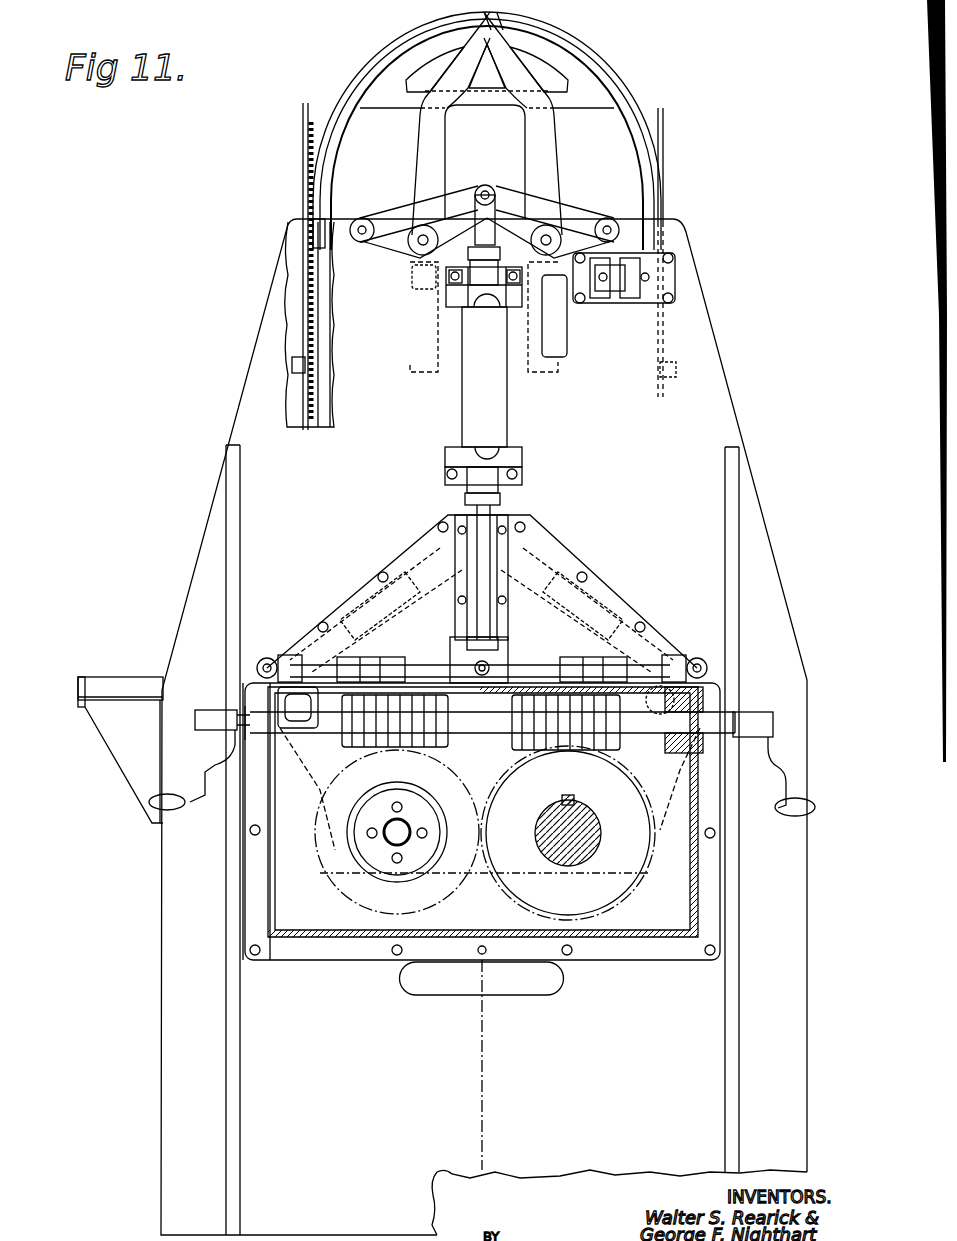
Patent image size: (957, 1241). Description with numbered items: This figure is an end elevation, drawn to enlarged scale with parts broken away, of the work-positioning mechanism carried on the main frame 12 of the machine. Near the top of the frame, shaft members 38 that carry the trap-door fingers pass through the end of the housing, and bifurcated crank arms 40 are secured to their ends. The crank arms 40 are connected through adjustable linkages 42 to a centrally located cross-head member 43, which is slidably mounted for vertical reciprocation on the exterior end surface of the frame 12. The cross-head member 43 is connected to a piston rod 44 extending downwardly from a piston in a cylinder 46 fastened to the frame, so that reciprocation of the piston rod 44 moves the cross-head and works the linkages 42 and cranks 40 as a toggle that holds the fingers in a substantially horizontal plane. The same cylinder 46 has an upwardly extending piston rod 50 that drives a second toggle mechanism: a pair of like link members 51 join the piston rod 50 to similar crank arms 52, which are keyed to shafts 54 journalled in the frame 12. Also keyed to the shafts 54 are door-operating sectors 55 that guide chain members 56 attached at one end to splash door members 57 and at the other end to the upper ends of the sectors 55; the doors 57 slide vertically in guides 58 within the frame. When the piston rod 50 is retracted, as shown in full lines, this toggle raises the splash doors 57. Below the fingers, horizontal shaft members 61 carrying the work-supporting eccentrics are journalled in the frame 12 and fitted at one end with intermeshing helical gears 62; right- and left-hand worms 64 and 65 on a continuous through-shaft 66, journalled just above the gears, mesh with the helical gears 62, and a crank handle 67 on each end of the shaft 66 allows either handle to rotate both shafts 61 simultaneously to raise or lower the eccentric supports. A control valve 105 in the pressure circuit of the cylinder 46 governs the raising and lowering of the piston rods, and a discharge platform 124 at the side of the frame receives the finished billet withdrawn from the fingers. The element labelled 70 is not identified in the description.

The main frame 12 is at (248, 399).
The shaft members 38 is at (240, 682).
The bifurcated crank arms 40 is at (267, 657).
The adjustable linkages 42 is at (362, 657).
The cross-head member 43 is at (503, 642).
The piston rod 44 is at (492, 512).
The cylinder 46 is at (463, 428).
The piston rod 50 is at (490, 258).
The link members 51 is at (400, 215).
The crank arms 52 is at (402, 248).
The shafts 54 is at (428, 268).
The sectors 55 is at (372, 75).
The chain members 56 is at (345, 100).
The splash door members 57 is at (305, 152).
The guides 58 is at (303, 325).
The horizontal shaft members 61 is at (387, 822).
The helical gears 62 is at (335, 878).
The right-hand worm 64 is at (345, 740).
The left-hand worm 65 is at (600, 735).
The through-shaft 66 is at (200, 712).
The crank handle 67 is at (172, 810).
The bracket 70 is at (418, 375).
The control valve 105 is at (628, 300).
The discharge platform 124 is at (112, 678).